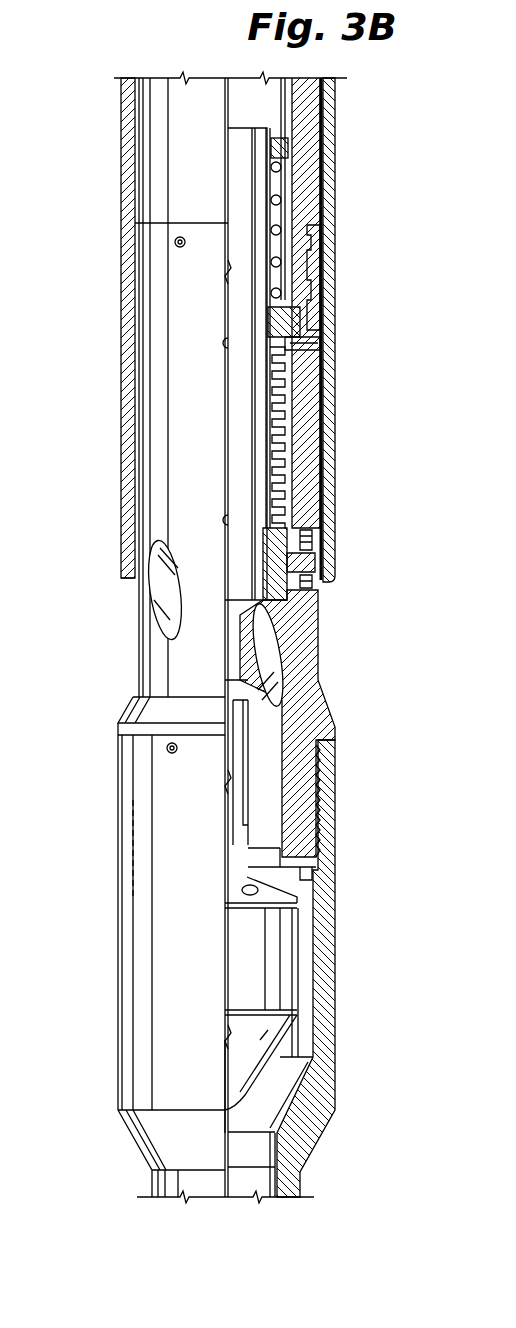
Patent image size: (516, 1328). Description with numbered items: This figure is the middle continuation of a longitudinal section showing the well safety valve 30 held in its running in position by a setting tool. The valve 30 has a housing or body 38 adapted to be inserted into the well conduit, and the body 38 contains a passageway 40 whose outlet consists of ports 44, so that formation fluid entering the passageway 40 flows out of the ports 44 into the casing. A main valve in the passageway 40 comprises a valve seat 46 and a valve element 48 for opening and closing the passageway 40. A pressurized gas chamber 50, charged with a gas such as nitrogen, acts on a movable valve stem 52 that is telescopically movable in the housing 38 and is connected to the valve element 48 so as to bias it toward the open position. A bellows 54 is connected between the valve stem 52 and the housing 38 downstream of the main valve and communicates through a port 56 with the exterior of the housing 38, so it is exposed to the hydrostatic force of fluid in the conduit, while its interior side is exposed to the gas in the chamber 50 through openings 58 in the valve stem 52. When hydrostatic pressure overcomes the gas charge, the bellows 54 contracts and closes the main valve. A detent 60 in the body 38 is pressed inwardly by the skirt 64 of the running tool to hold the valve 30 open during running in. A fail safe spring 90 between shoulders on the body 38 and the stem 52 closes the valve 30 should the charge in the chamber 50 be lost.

The valve 30 is at (320, 678).
The housing or body 38 is at (330, 995).
The passageway 40 is at (305, 933).
The ports 44 is at (155, 603).
The valve seat 46 is at (300, 868).
The valve element 48 is at (290, 897).
The pressurized gas chamber 50 is at (235, 470).
The valve stem 52 is at (265, 483).
The bellows 54 is at (282, 418).
The port 56 is at (318, 345).
The openings 58 is at (265, 523).
The detent 60 is at (330, 572).
The skirt 64 is at (322, 222).
The spring 90 is at (367, 277).